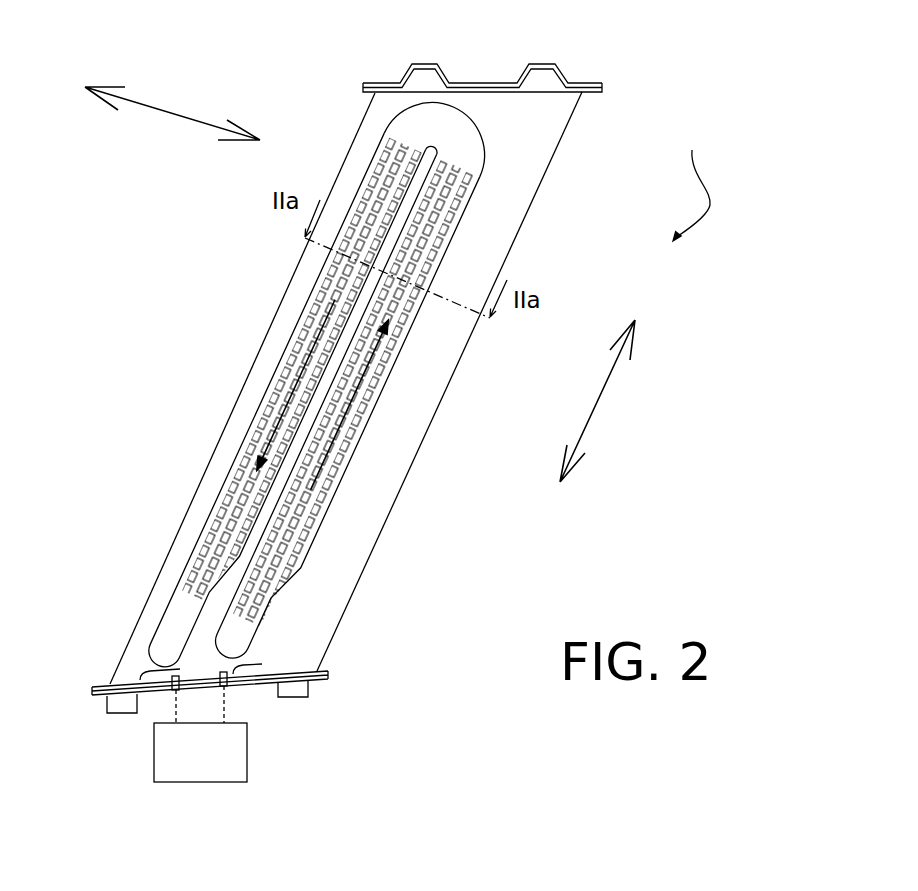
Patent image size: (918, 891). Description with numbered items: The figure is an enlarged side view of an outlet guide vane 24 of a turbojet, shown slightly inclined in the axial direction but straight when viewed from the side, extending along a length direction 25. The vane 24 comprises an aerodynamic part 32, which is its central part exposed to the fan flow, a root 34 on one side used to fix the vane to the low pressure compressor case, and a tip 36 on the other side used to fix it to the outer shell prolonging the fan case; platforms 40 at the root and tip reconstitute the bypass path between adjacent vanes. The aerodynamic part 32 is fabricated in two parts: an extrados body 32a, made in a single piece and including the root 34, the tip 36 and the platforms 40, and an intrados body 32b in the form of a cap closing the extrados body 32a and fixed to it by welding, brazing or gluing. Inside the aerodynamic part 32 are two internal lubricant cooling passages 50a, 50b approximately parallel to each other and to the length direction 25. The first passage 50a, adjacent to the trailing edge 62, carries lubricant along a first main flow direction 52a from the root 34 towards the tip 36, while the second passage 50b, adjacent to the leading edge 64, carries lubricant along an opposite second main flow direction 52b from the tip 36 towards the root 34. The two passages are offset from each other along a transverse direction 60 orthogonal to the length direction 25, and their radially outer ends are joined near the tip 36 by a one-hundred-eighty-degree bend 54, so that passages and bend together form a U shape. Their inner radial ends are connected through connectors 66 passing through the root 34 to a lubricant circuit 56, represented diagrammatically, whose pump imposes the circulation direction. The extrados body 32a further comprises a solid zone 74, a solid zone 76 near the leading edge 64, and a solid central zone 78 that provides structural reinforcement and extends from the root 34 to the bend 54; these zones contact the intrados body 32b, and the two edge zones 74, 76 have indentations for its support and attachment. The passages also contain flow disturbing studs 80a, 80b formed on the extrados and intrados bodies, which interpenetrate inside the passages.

The outlet guide vane 24 is at (691, 185).
The length direction 25 is at (603, 395).
The aerodynamic part 32 is at (368, 392).
The extrados body 32a is at (440, 441).
The intrados body 32b is at (311, 407).
The root 34 is at (312, 688).
The tip 36 is at (542, 80).
The platforms 40 is at (366, 91).
The first internal lubricant cooling passage 50a is at (297, 609).
The second internal lubricant cooling passage 50b is at (185, 557).
The first main flow direction 52a is at (330, 490).
The second main flow direction 52b is at (300, 383).
The 180° bend 54 is at (466, 135).
The lubricant circuit 56 is at (225, 766).
The transverse direction 60 is at (173, 115).
The trailing edge 62 is at (541, 189).
The leading edge 64 is at (215, 445).
The connectors 66 is at (147, 688).
The solid zone 74 is at (392, 432).
The solid zone 76 is at (207, 494).
The solid central zone 78 is at (400, 233).
The first fins 80a is at (302, 508).
The second fins 80b is at (293, 562).